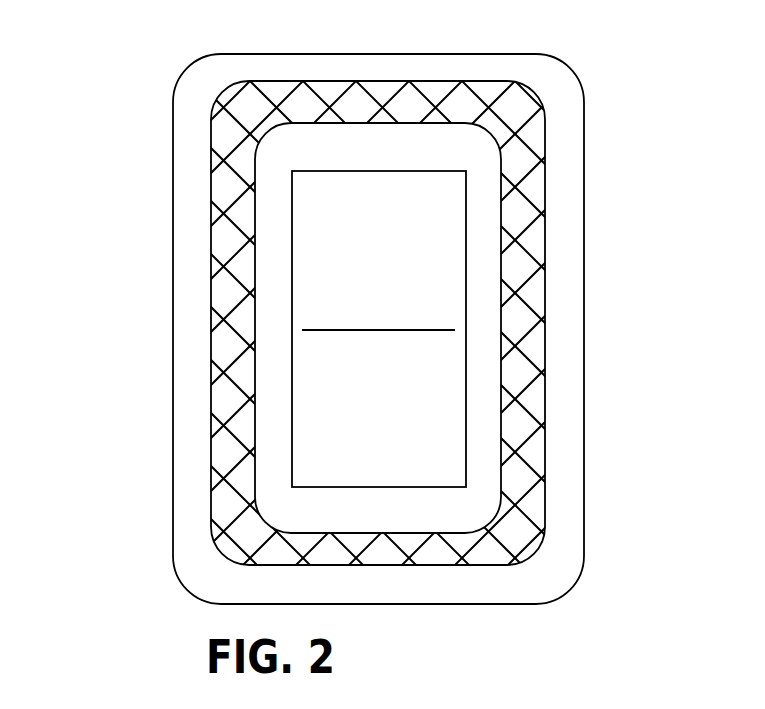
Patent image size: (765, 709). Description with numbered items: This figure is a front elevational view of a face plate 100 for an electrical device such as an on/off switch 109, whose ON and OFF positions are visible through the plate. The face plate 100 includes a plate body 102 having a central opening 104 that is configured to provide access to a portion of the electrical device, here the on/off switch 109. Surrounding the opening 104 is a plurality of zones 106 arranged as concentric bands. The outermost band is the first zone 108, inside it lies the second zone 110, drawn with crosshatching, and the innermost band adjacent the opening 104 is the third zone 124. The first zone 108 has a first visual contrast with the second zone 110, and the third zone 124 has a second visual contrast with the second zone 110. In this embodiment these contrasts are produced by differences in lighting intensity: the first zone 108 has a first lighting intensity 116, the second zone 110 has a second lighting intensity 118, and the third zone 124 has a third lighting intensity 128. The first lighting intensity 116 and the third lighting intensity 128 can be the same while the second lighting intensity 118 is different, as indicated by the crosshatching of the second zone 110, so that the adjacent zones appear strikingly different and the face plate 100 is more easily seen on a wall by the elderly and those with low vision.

The face plate 100 is at (626, 156).
The plate body 102 is at (563, 87).
The opening 104 is at (450, 437).
The plurality of zones 106 is at (382, 354).
The first zone 108 is at (292, 323).
The first lighting intensity 116 is at (192, 315).
The second zone 110 is at (382, 354).
The second lighting intensity 118 is at (232, 412).
The third zone 124 is at (279, 328).
The third lighting intensity 128 is at (277, 485).
The on/off switch 109 is at (447, 367).